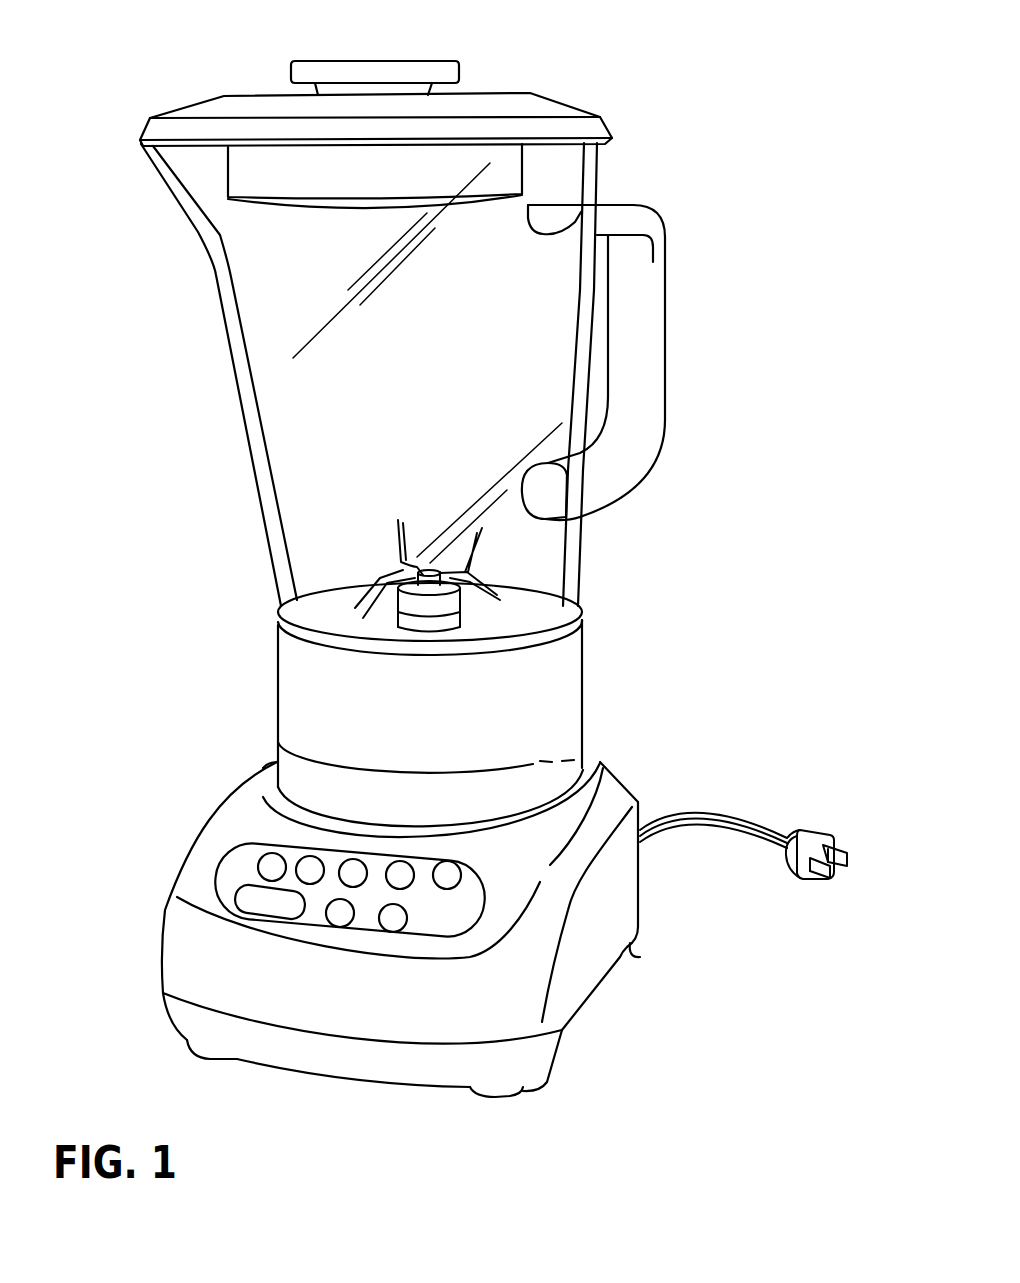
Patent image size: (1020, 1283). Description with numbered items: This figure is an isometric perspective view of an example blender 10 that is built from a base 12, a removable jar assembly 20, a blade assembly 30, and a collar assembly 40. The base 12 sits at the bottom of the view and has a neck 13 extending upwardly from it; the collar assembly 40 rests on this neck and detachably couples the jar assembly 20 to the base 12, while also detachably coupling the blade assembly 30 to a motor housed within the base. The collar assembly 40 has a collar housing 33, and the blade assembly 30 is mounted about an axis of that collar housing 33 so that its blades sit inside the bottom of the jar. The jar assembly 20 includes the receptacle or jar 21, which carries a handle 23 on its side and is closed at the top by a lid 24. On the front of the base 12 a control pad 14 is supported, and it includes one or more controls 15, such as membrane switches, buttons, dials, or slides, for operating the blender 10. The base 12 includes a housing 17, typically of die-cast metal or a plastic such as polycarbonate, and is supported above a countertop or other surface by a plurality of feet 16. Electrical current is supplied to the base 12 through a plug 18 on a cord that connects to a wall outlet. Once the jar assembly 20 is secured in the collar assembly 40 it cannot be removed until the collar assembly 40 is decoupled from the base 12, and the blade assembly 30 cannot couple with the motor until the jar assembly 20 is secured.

The blender 10 is at (701, 29).
The base 12 is at (643, 782).
The neck 13 is at (593, 758).
The control pad 14 is at (439, 928).
The controls 15 is at (342, 915).
The feet 16 is at (188, 1042).
The housing 17 is at (240, 807).
The plug 18 is at (807, 822).
The jar assembly 20 is at (205, 285).
The jar 21 is at (290, 528).
The handle 23 is at (645, 372).
The lid 24 is at (516, 104).
The blade assembly 30 is at (417, 550).
The collar housing 33 is at (290, 688).
The collar assembly 40 is at (615, 683).